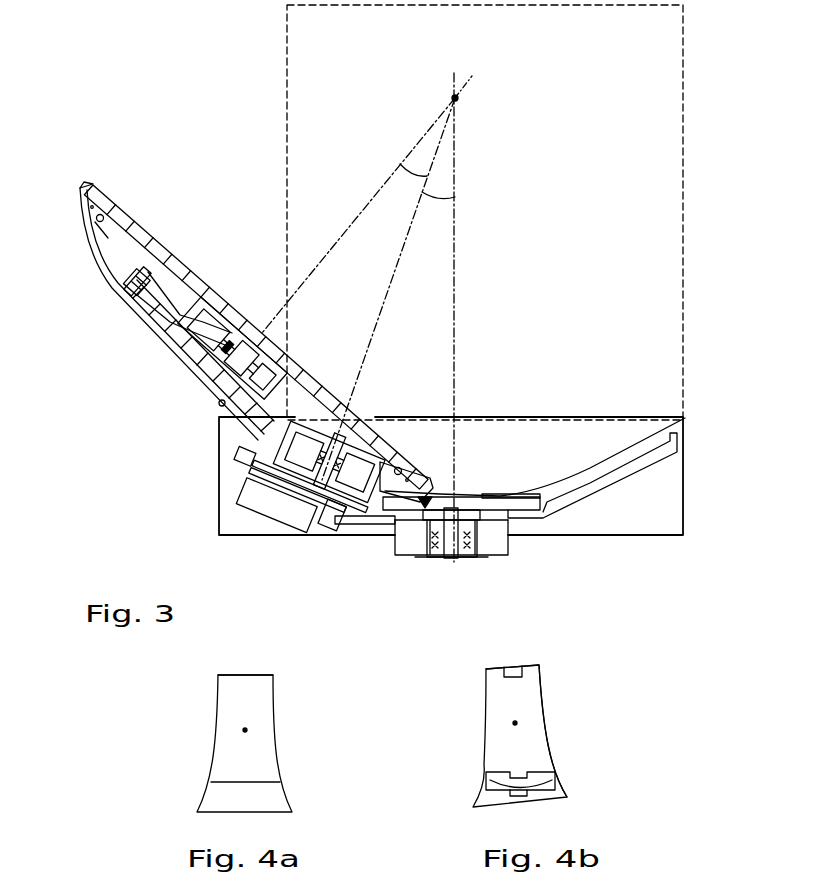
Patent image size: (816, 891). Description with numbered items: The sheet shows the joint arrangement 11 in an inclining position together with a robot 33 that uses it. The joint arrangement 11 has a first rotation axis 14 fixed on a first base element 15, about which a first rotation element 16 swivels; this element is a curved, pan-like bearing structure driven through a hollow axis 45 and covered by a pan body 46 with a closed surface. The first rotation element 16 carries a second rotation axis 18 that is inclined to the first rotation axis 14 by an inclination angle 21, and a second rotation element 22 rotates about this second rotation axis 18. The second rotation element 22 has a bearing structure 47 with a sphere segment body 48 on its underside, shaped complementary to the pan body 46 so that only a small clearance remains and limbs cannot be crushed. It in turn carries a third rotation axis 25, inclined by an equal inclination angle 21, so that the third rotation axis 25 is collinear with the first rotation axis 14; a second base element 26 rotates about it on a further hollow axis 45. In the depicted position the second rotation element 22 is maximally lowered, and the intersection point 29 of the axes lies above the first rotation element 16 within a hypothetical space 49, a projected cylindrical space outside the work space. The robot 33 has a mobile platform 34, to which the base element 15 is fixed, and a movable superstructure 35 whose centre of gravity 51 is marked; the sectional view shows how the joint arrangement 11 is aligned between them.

In FIG. 4B, the joint arrangement 11 is at (550, 742).
In FIG. 3, the first rotation axis 14 is at (457, 313).
In FIG. 3, the first base element 15 is at (384, 549).
In FIG. 3, the first rotation element 16 is at (590, 514).
In FIG. 3, the second rotation axis 18 is at (377, 318).
In FIG. 3, the inclination angle 21 is at (415, 158).
In FIG. 3, the second rotation element 22 is at (231, 345).
In FIG. 3, the third rotation axis 25 is at (338, 235).
In FIG. 3, the second base element 26 is at (223, 281).
In FIG. 3, the intersection point 29 is at (462, 98).
In FIG. 4A, the robot 33 is at (210, 742).
In FIG. 4B, the robot 33 is at (565, 729).
In FIG. 4A, the mobile platform 34 is at (215, 795).
In FIG. 4B, the mobile platform 34 is at (565, 793).
In FIG. 4A, the superstructure 35 is at (216, 703).
In FIG. 4B, the superstructure 35 is at (545, 700).
In FIG. 3, the hollow axis 45 is at (261, 323).
In FIG. 3, the pan body 46 is at (625, 440).
In FIG. 3, the bearing structure 47 is at (177, 372).
In FIG. 3, the sphere segment body 48 is at (97, 248).
In FIG. 3, the hypothetical space 49 is at (688, 204).
In FIG. 4A, the centre of gravity 51 is at (245, 730).
In FIG. 4B, the centre of gravity 51 is at (515, 723).